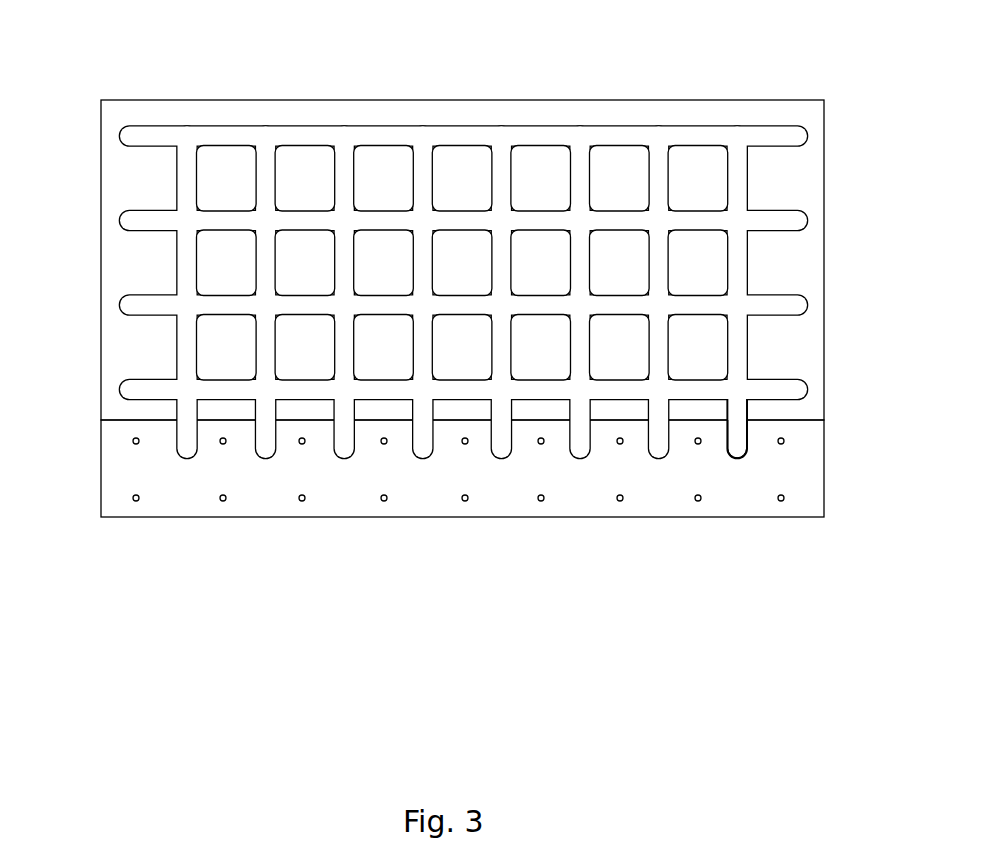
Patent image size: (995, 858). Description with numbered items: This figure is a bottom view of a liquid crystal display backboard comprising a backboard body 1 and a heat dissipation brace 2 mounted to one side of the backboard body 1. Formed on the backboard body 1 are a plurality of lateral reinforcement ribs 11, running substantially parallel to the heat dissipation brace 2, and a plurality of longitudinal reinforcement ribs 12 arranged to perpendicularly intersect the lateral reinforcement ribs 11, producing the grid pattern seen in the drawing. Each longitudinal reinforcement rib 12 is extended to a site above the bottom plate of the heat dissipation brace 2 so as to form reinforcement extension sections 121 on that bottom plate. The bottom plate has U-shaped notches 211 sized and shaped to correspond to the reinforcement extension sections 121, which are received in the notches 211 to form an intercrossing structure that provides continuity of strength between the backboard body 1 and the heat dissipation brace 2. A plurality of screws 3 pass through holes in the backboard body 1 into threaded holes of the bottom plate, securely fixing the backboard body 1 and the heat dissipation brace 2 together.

The backboard body 1 is at (122, 266).
The heat dissipation brace 2 is at (128, 479).
The screws 3 is at (303, 500).
The lateral reinforcement ribs 11 is at (381, 136).
The longitudinal reinforcement ribs 12 is at (735, 345).
The reinforcement extension sections 121 is at (735, 437).
The notches 211 is at (735, 457).